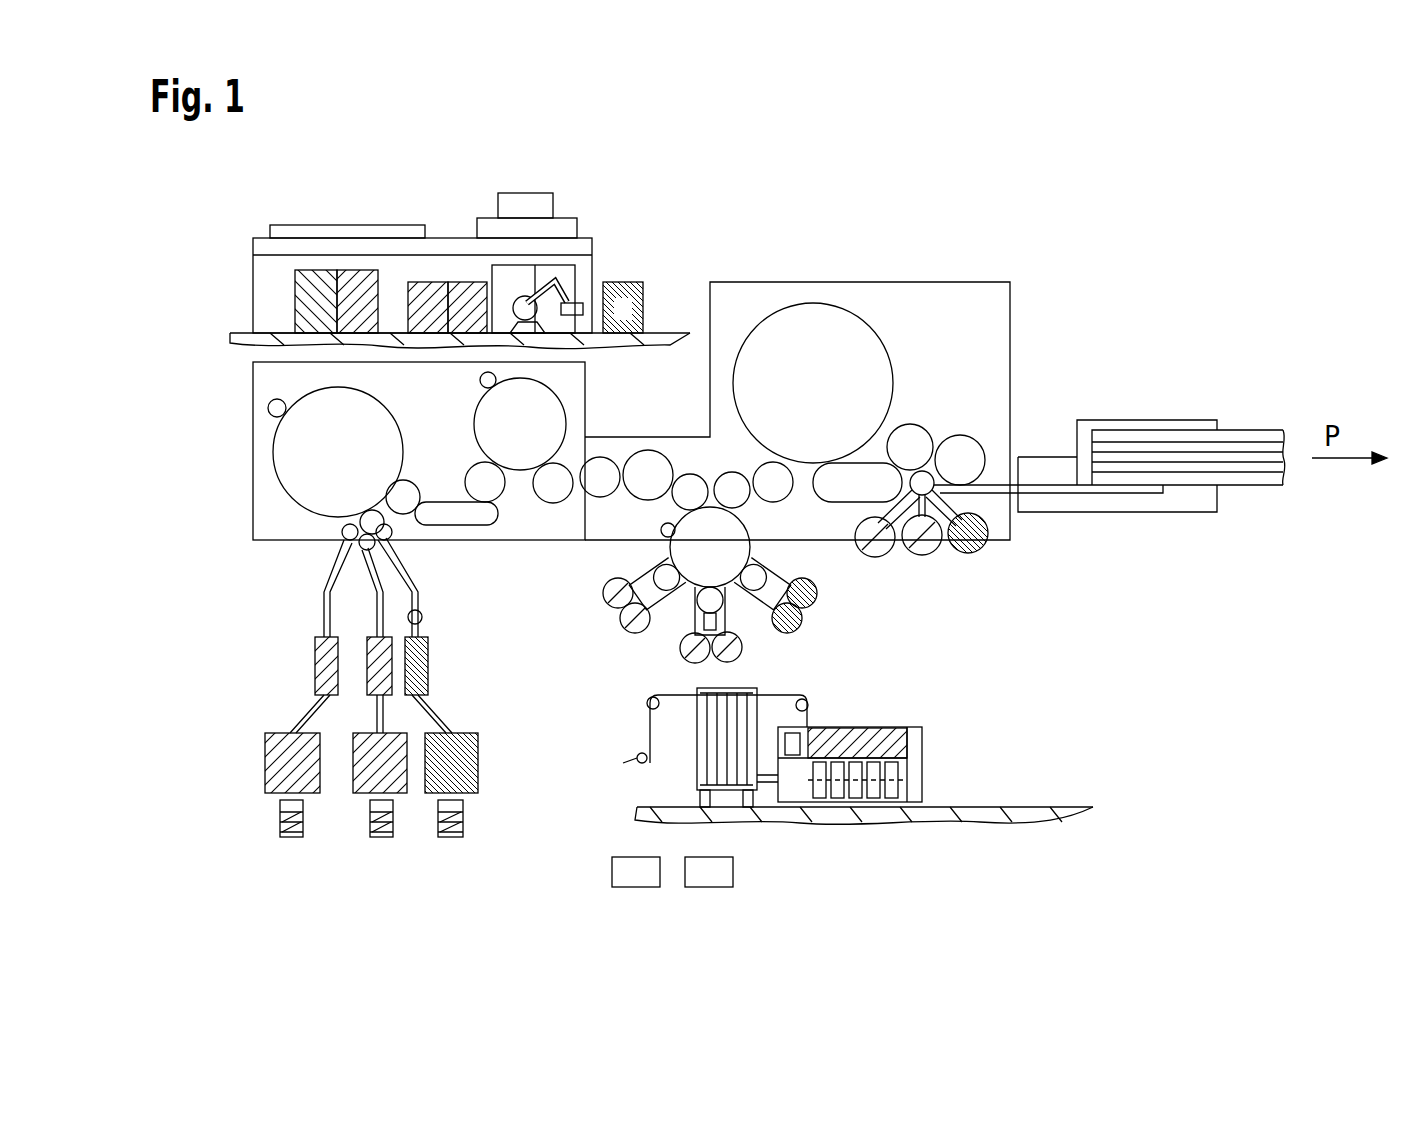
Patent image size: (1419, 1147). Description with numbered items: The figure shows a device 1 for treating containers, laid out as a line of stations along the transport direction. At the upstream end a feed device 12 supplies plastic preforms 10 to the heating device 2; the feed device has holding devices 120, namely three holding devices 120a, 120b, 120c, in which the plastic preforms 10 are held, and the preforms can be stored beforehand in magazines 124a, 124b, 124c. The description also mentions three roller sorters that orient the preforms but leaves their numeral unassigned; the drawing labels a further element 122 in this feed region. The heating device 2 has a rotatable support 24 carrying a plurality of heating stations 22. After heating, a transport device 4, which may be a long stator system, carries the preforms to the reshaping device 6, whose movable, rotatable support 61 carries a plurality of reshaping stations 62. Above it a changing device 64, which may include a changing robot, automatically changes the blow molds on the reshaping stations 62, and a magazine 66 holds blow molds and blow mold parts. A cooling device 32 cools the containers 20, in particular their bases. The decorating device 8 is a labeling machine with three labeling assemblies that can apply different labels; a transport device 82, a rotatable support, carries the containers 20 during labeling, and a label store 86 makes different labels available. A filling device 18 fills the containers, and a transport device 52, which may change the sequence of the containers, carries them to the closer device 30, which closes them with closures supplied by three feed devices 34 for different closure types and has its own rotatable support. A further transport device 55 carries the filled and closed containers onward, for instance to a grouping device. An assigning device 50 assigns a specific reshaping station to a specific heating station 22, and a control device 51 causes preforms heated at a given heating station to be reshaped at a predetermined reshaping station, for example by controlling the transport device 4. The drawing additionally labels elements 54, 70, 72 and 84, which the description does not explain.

The device 1 is at (753, 197).
The heating device 2 is at (303, 487).
The transport device 4 is at (453, 525).
The reshaping device 6 is at (522, 445).
The decorating device 8 is at (701, 594).
The plastic preforms 10 is at (423, 617).
The feed device 12 is at (342, 537).
The filling device 18 is at (803, 333).
The containers 20 is at (660, 532).
The heating stations 22 is at (270, 404).
The rotatable support 24 is at (273, 448).
The closer device 30 is at (935, 492).
The cooling device 32 is at (650, 458).
The feed devices 34 is at (885, 556).
The assigning device 50 is at (632, 882).
The control device 51 is at (702, 882).
The transport device 52 is at (915, 440).
The roller 54 is at (957, 443).
The further transport device 55 is at (982, 443).
The rotatable support 61 is at (478, 407).
The reshaping stations 62 is at (480, 379).
The changing device 64 is at (397, 268).
The magazine 66 is at (625, 282).
The conveyor 70 is at (563, 280).
The output stack 72 is at (1140, 430).
The transport device 82 is at (733, 545).
The wheel 84 is at (612, 592).
The label store 86 is at (847, 813).
The holding devices 120 is at (375, 804).
The holding device 120a is at (290, 752).
The holding device 120b is at (357, 797).
The holding device 120c is at (480, 760).
The pump 122 is at (410, 670).
The magazine 124a is at (291, 840).
The magazine 124b is at (382, 840).
The magazine 124c is at (450, 840).